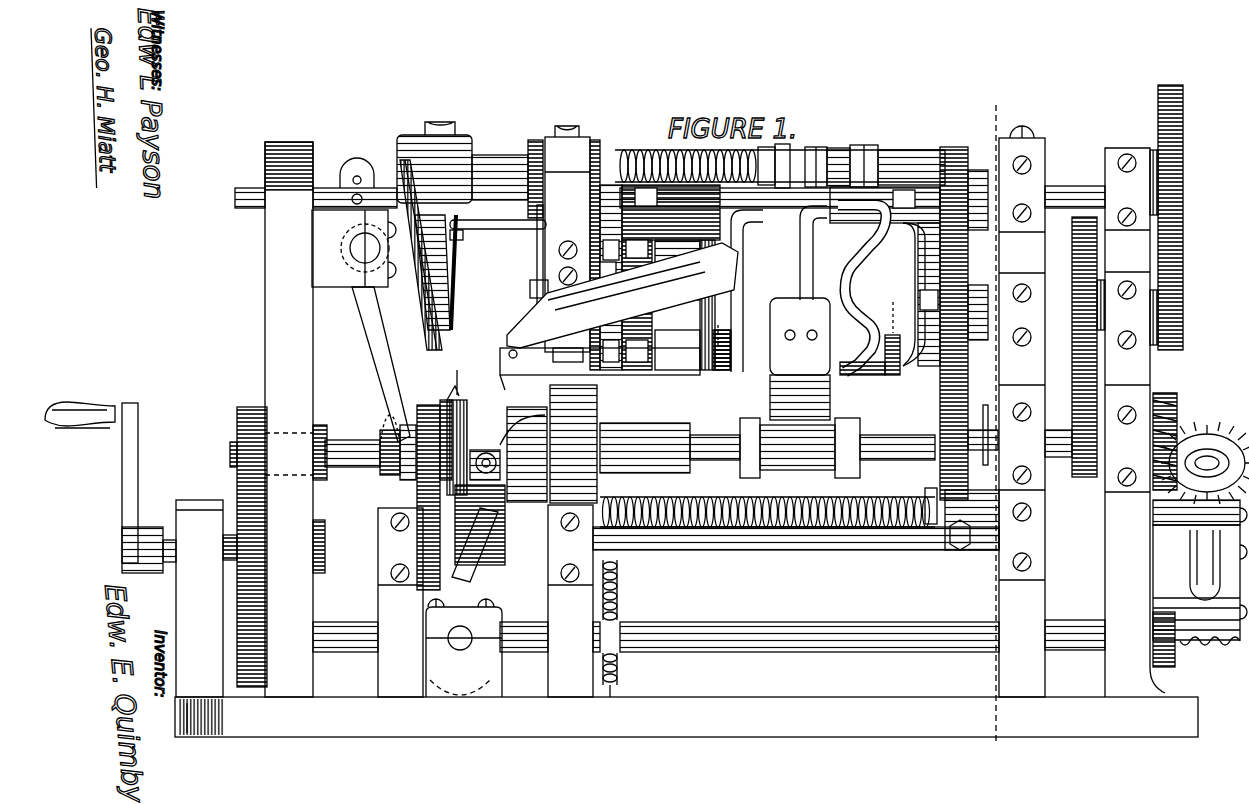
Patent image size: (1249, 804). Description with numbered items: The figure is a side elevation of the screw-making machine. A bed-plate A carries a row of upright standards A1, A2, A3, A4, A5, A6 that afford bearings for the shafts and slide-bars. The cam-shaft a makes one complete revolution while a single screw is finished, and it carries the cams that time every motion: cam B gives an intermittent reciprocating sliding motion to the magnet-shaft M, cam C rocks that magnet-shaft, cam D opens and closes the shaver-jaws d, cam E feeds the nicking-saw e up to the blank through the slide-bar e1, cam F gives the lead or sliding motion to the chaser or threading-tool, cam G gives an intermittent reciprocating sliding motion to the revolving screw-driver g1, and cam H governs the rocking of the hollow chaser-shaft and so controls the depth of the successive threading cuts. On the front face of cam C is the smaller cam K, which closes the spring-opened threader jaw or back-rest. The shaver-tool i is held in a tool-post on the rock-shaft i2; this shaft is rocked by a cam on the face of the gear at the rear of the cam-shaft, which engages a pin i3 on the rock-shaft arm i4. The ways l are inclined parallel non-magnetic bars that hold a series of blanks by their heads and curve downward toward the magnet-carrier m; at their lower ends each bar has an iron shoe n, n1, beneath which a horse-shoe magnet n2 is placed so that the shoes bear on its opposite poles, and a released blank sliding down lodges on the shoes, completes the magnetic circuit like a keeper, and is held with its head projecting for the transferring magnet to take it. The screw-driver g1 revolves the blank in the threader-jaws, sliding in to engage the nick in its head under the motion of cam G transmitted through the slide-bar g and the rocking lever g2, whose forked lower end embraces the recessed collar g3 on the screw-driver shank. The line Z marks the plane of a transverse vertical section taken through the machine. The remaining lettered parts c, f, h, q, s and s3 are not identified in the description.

The bed-plate A is at (686, 717).
The upright standard A1 is at (141, 549).
The upright standard A2 is at (278, 419).
The upright standard A3 is at (440, 602).
The upright standard A4 is at (569, 411).
The upright standard A5 is at (1035, 411).
The upright standard A6 is at (1118, 422).
The magnet-shaft sliding cam B is at (814, 359).
The magnet-shaft rocking cam C is at (606, 255).
The shaver-jaw cam D is at (812, 349).
The nicker-saw cam E is at (921, 294).
The lead cam F is at (692, 296).
The screw-driver cam G is at (738, 353).
The chaser-shaft cam H is at (637, 305).
The back-rest cam K is at (608, 270).
The magnet-shaft M is at (780, 161).
The section line z z Z is at (993, 432).
The cam-shaft a is at (805, 290).
The rod c is at (499, 265).
The shaver-jaws d is at (543, 444).
The nicking-saw e is at (484, 465).
The slide-bar e1 is at (844, 517).
The worm f is at (767, 512).
The slide-bar g is at (364, 181).
The revolving screw-driver g1 is at (362, 450).
The rocking lever g2 is at (361, 326).
The recessed collar g3 is at (398, 453).
The spring h is at (615, 628).
The shaver-tool i is at (478, 533).
The rock-shaft i2 is at (759, 539).
The pin i3 is at (964, 323).
The rock-shaft arm i4 is at (983, 435).
The ways l is at (622, 295).
The magnet-carrier m is at (434, 236).
The iron shoe n is at (438, 440).
The iron shoe n1 is at (592, 369).
The horse-shoe magnet n2 is at (560, 361).
The pulley q is at (781, 212).
The spring plate s is at (461, 432).
The rod s3 is at (463, 272).